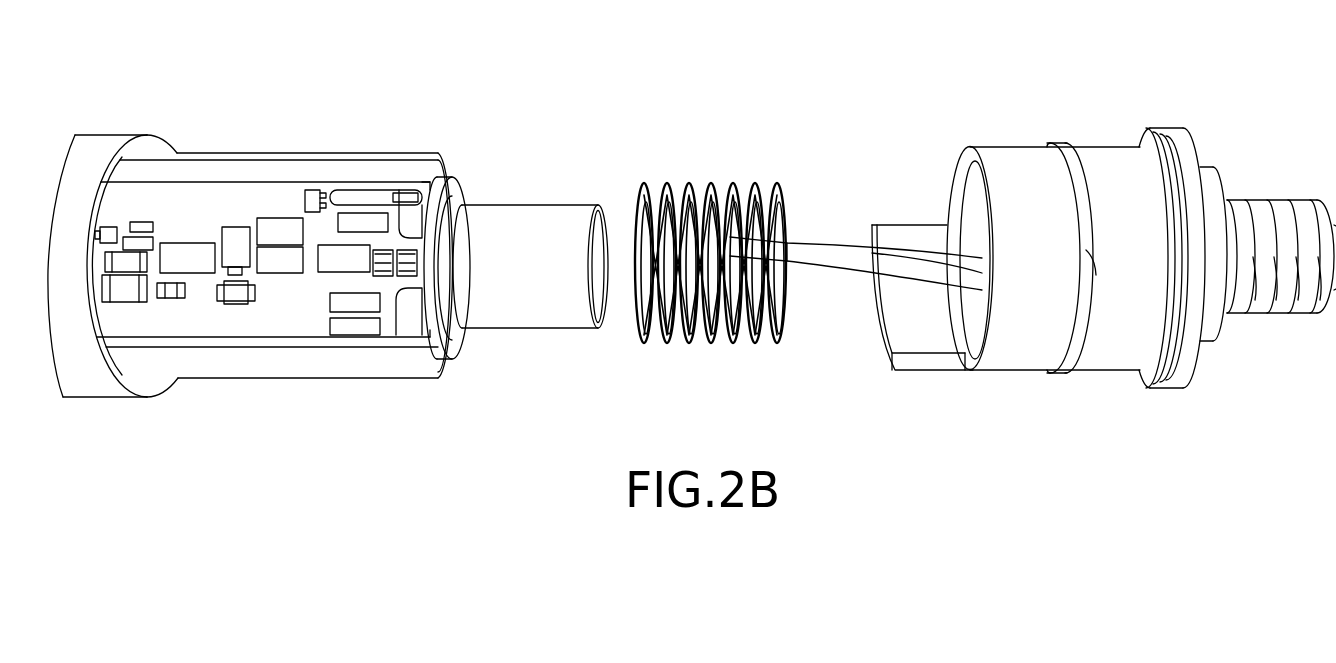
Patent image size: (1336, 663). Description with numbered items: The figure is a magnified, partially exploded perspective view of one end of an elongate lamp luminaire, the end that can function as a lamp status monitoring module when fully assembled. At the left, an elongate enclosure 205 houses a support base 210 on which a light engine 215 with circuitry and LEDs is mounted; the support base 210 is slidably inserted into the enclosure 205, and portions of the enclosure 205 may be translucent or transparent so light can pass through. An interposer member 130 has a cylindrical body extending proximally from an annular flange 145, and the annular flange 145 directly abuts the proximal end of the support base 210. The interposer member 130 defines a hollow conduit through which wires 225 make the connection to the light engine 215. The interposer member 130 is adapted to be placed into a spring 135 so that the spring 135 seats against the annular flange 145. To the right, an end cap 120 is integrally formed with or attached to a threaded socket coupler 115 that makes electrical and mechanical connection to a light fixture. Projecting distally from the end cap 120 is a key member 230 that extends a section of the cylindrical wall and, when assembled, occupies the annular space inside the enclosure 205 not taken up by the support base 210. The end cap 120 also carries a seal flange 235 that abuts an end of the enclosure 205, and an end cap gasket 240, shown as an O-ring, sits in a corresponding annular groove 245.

The threaded socket coupler 115 is at (1280, 212).
The end cap 120 is at (1025, 110).
The interposer member 130 is at (540, 228).
The spring 135 is at (722, 183).
The annular flange 145 is at (458, 348).
The elongate enclosure 205 is at (108, 134).
The support base 210 is at (415, 157).
The light engine 215 is at (274, 160).
The wires 225 is at (822, 262).
The key member 230 is at (903, 320).
The seal flange 235 is at (1148, 148).
The end cap gasket 240 is at (1060, 372).
The annular groove 245 is at (1093, 263).